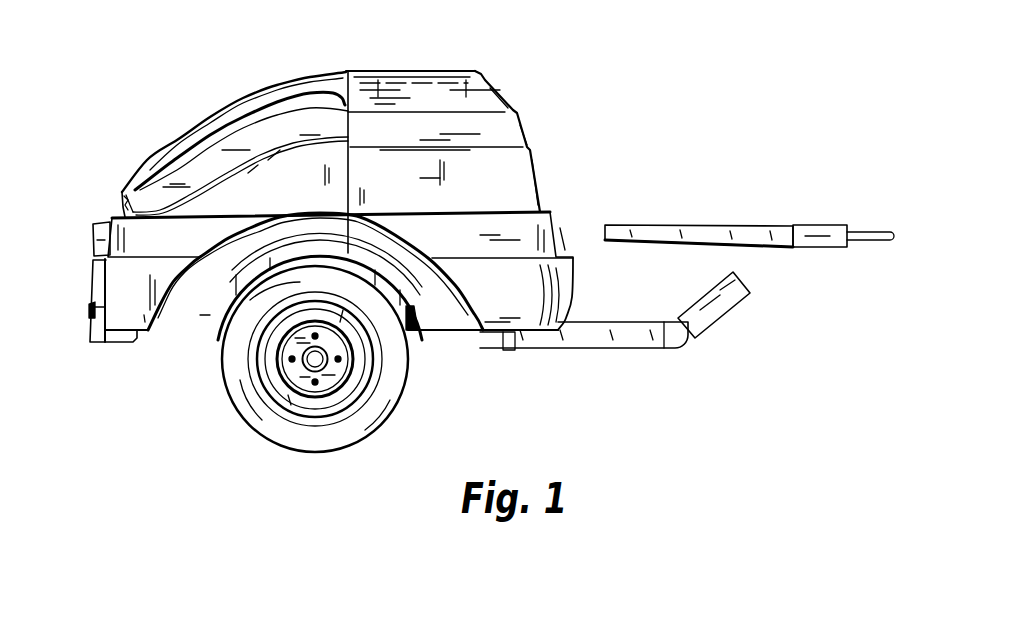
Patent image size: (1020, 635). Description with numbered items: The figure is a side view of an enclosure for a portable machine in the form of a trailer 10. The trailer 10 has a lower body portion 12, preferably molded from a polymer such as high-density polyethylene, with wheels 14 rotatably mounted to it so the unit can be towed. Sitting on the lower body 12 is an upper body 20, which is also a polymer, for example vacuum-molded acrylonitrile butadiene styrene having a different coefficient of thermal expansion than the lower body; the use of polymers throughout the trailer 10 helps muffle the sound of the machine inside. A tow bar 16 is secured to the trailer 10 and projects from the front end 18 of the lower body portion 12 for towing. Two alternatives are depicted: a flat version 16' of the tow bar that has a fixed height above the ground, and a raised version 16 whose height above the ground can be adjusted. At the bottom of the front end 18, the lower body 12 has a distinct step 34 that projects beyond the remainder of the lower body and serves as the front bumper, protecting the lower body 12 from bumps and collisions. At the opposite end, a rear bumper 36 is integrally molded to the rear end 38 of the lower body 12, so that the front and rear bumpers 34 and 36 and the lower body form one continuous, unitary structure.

The trailer 10 is at (121, 50).
The lower body portion 12 is at (130, 225).
The wheels 14 is at (240, 388).
The tow bar 16 is at (615, 348).
The flat version of tow bar 16' is at (749, 200).
The front end 18 is at (584, 214).
The upper body 20 is at (456, 54).
The distinct step 34 is at (572, 297).
The rear bumper 36 is at (94, 317).
The rear end 38 is at (66, 287).